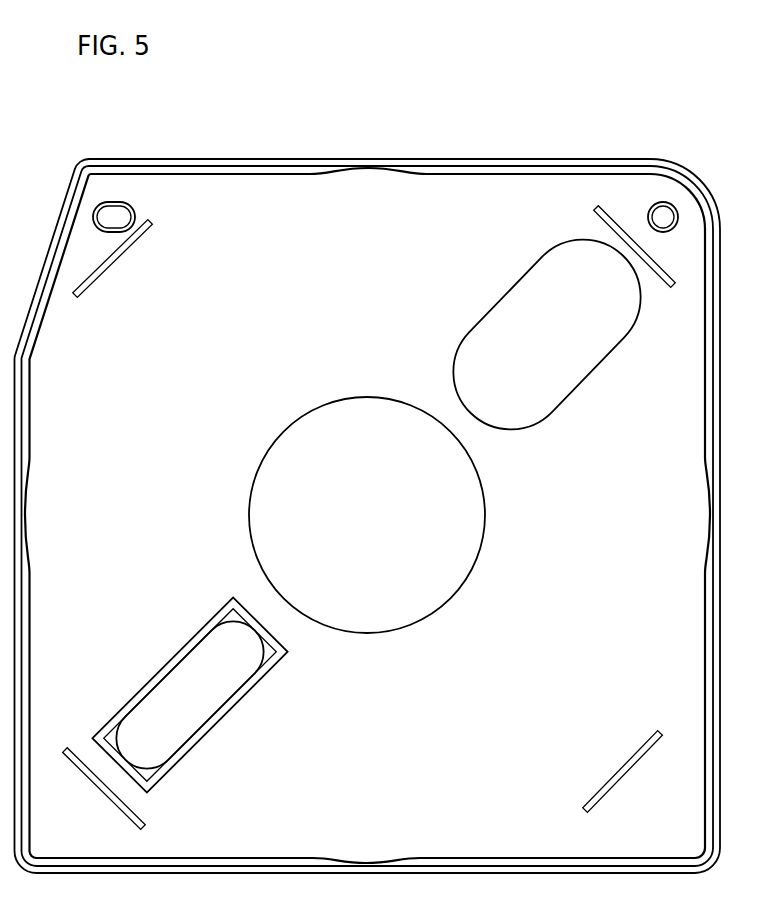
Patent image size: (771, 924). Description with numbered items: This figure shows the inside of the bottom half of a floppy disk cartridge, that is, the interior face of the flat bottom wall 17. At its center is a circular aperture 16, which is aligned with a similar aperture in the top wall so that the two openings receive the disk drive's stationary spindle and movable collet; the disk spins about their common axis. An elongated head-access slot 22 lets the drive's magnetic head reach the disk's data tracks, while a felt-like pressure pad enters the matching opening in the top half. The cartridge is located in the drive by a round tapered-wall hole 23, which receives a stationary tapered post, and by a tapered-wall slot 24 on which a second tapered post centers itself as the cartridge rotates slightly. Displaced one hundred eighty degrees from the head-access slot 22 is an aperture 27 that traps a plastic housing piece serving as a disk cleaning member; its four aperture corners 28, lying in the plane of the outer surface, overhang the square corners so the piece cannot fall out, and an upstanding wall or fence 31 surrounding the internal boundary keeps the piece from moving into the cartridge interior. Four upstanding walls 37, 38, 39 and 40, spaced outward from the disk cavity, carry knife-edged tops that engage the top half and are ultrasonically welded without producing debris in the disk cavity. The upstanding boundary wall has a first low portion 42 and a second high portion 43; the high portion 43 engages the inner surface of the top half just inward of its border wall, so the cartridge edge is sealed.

The aperture 16 is at (322, 417).
The bottom wall 17 is at (358, 192).
The slot 22 is at (489, 313).
The tapered-wall hole 23 is at (655, 212).
The tapered-wall slot 24 is at (120, 220).
The aperture 27 is at (213, 682).
The aperture corners 28 is at (232, 615).
The upstanding wall or fence 31 is at (190, 647).
The upstanding wall 37 is at (119, 259).
The upstanding wall 38 is at (600, 216).
The upstanding wall 39 is at (608, 787).
The upstanding wall 40 is at (100, 782).
The first low portion 42 is at (17, 408).
The second high portion 43 is at (26, 435).